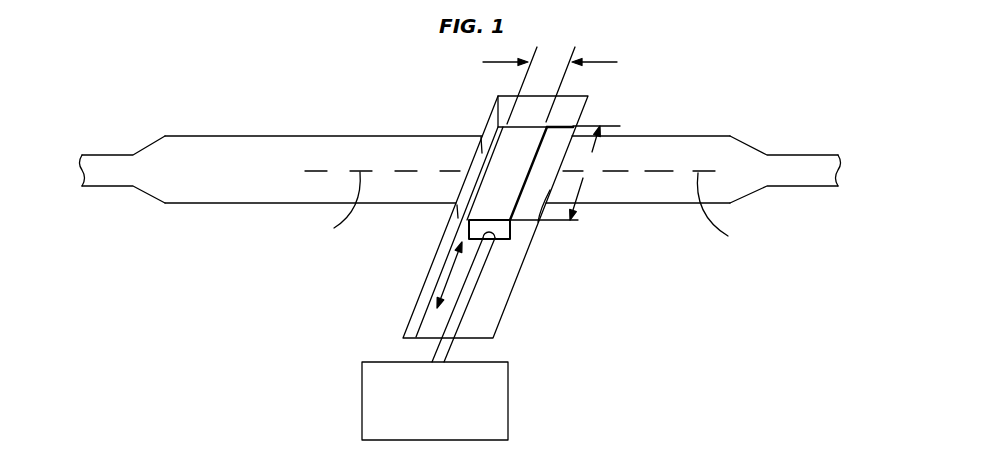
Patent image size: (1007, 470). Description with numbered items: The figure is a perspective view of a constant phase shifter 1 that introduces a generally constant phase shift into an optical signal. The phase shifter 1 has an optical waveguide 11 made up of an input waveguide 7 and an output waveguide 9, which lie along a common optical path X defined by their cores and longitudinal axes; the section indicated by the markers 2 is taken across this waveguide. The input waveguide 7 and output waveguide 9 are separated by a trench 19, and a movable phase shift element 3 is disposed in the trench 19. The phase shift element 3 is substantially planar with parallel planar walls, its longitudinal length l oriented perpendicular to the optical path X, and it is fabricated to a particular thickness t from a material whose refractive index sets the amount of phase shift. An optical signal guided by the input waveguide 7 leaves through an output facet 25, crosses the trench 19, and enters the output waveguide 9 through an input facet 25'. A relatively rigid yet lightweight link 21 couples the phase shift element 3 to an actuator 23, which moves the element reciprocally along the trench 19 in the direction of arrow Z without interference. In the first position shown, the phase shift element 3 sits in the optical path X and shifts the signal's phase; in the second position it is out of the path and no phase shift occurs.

The constant phase shifter 1 is at (643, 277).
The section line 2- 2 is at (70, 169).
The phase shift element 3 is at (528, 143).
The input waveguide 7 is at (217, 136).
The output waveguide 9 is at (296, 136).
The optical waveguide 11 is at (286, 270).
The trench 19 is at (493, 293).
The link 21 is at (440, 357).
The actuator 23 is at (508, 440).
The output facet 25 is at (427, 232).
The input facet 25' is at (572, 237).